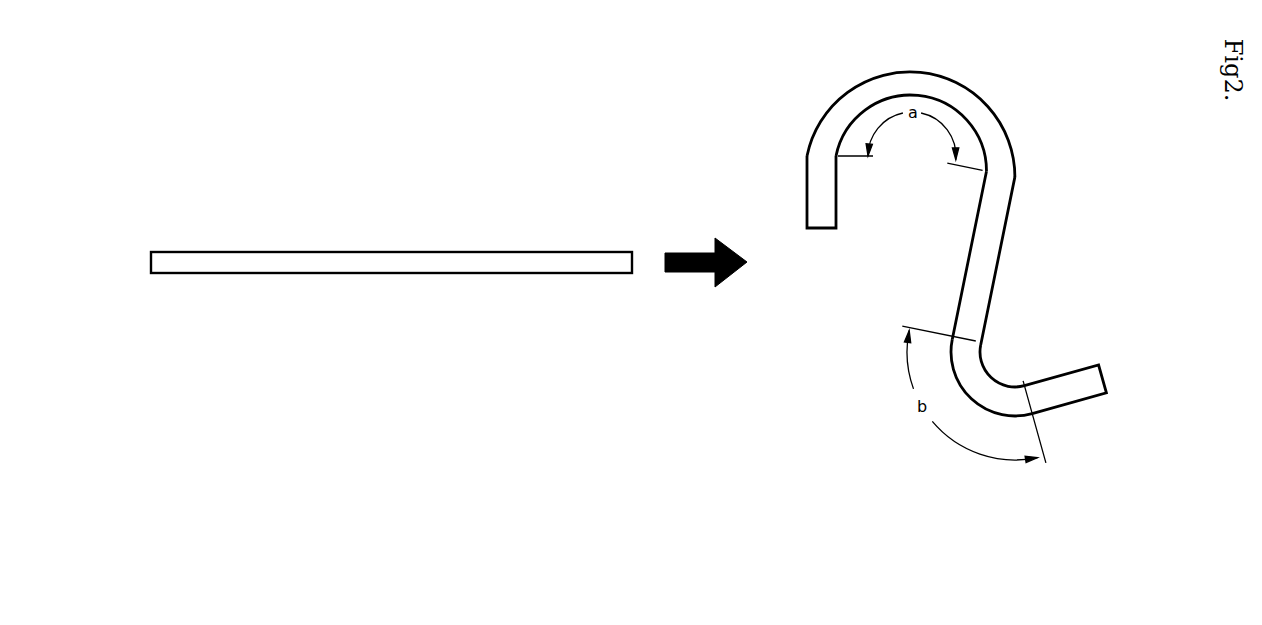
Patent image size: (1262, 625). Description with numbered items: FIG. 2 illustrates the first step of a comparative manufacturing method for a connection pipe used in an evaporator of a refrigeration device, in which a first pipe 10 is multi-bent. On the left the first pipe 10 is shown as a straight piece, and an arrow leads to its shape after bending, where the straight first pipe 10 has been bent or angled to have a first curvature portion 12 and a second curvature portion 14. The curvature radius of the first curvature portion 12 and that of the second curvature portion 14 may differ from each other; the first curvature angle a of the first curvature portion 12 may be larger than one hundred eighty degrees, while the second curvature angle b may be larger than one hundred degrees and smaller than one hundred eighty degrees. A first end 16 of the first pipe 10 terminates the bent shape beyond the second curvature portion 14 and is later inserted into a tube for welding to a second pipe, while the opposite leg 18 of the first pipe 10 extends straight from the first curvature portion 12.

The first pipe 10 is at (394, 252).
The first curvature portion 12 is at (995, 120).
The second curvature portion 14 is at (987, 380).
The first end 16 is at (1105, 382).
The straight leg 18 is at (820, 228).